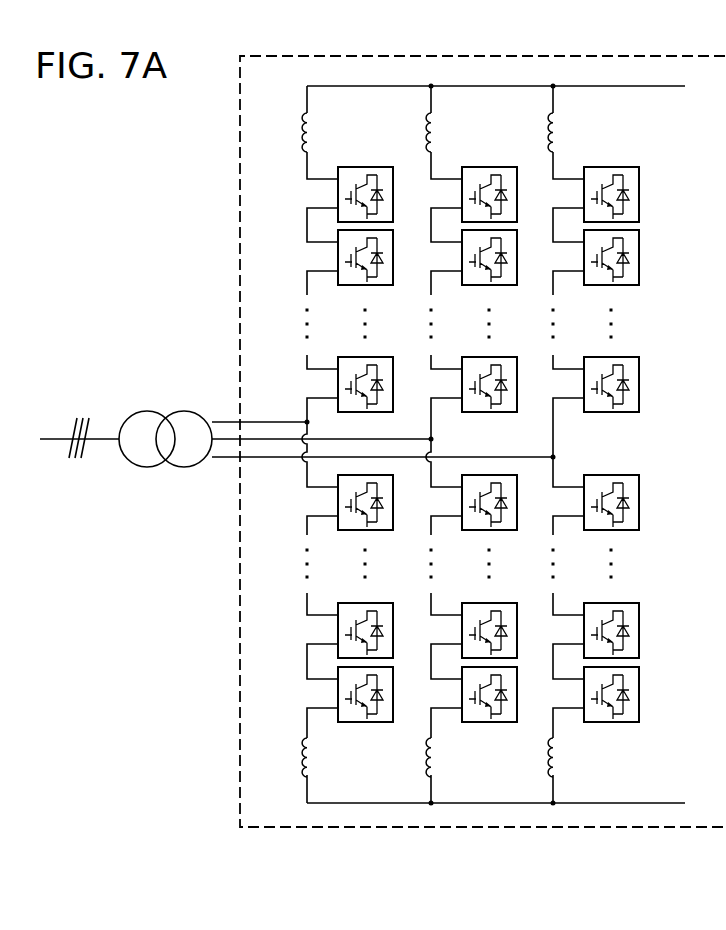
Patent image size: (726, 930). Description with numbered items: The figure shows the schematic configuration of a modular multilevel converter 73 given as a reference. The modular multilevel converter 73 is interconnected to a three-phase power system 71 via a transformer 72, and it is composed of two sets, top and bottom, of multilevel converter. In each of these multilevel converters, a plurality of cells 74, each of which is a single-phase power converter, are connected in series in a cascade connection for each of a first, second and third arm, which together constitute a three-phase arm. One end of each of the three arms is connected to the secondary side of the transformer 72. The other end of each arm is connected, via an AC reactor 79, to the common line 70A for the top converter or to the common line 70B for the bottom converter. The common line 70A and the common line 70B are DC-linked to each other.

The common line 70A is at (643, 88).
The common line 70B is at (643, 803).
The three-phase power system 71 is at (80, 418).
The transformer 72 is at (147, 411).
The modular multilevel converter 73 is at (548, 57).
The cell 74 is at (337, 697).
The AC reactor 79 is at (574, 753).